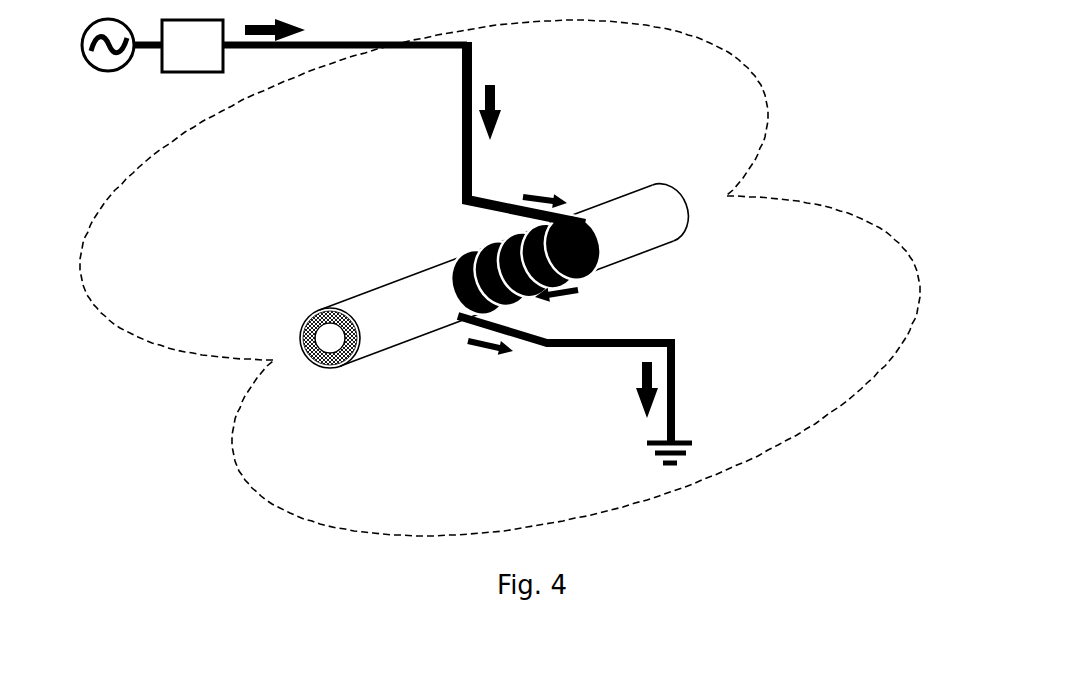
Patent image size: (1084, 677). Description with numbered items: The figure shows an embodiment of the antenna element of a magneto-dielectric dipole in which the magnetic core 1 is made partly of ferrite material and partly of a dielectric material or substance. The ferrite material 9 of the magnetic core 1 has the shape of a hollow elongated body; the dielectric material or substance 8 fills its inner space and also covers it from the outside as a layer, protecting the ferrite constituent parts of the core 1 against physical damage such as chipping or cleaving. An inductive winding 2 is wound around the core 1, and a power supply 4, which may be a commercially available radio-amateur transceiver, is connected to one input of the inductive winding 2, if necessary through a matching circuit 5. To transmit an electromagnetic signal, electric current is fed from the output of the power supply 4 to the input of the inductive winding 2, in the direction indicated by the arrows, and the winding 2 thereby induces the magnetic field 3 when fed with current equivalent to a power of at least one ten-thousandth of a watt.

The magnetic core 1 is at (410, 340).
The inductive winding 2 is at (587, 283).
The magnetic field 3 is at (683, 152).
The power supply 4 is at (108, 72).
The matching circuit 5 is at (194, 72).
The fraction of magnetic core volume made of a dielectric material or substance 8 is at (387, 307).
The fraction of magnetic core volume made of ferrite material 9 is at (333, 340).